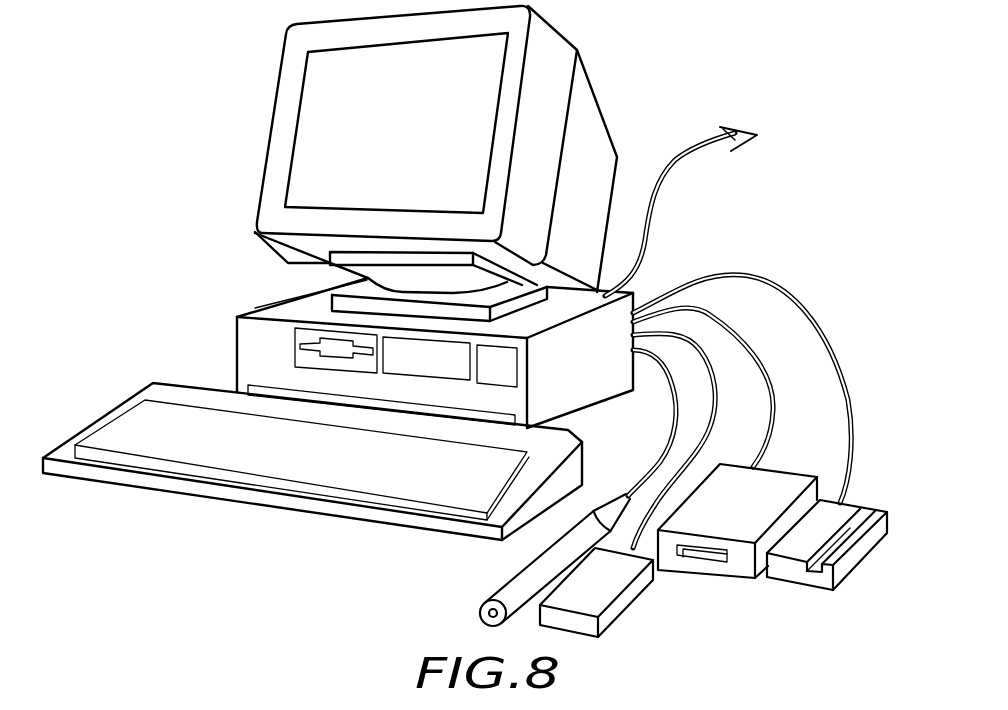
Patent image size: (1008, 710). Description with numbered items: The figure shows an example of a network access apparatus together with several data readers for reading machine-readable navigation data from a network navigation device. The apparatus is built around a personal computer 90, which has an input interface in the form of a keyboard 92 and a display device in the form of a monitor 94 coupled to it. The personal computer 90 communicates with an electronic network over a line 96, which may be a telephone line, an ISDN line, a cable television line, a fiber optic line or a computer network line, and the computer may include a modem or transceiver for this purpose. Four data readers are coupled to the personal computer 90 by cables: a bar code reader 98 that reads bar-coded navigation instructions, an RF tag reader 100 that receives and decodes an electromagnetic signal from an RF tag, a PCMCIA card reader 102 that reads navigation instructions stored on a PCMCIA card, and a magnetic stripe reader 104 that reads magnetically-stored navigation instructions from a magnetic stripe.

The personal computer 90 is at (255, 308).
The keyboard 92 is at (127, 405).
The monitor 94 is at (281, 70).
The line 96 is at (658, 192).
The bar code reader 98 is at (520, 572).
The RF tag reader 100 is at (620, 620).
The PCMCIA card reader 102 is at (755, 578).
The magnetic stripe reader 104 is at (840, 588).